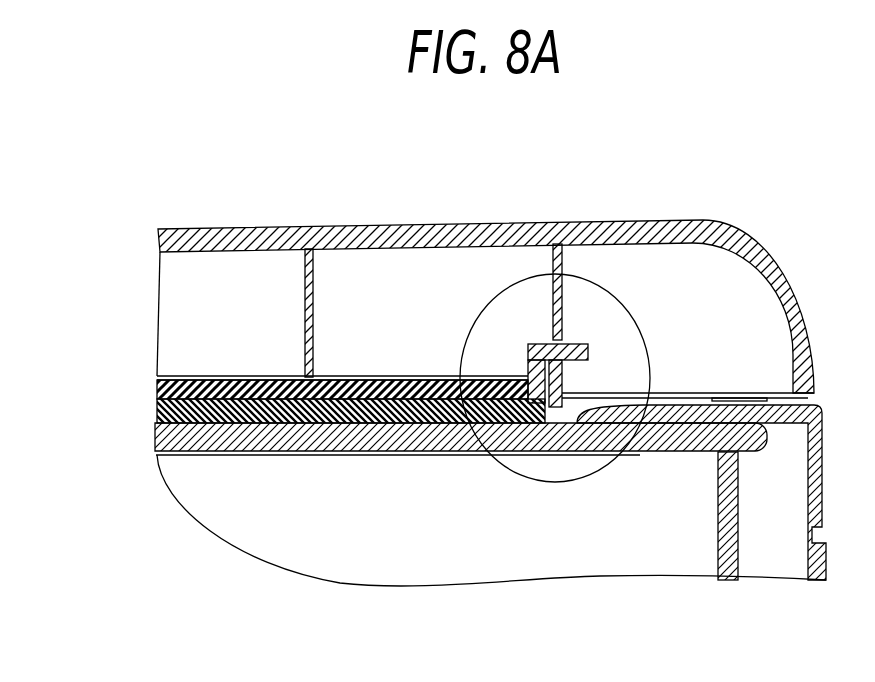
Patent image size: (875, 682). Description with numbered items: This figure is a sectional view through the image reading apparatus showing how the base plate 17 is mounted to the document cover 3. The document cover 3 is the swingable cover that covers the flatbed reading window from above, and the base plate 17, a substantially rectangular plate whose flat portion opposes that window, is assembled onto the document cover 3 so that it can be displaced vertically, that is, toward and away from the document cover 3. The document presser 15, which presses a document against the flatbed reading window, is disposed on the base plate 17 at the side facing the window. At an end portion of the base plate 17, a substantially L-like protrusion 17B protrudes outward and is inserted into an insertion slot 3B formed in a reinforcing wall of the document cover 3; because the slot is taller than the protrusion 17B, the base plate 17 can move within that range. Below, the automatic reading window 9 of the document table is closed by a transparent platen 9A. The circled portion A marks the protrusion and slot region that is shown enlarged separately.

The document cover 3 is at (507, 221).
The insertion slot 3B is at (558, 361).
The base plate 17 is at (268, 390).
The protrusion 17B is at (577, 344).
The document presser 15 is at (255, 408).
The automatic reading window 9 is at (461, 531).
The transparent platen 9A is at (358, 440).
The portion A is at (604, 283).